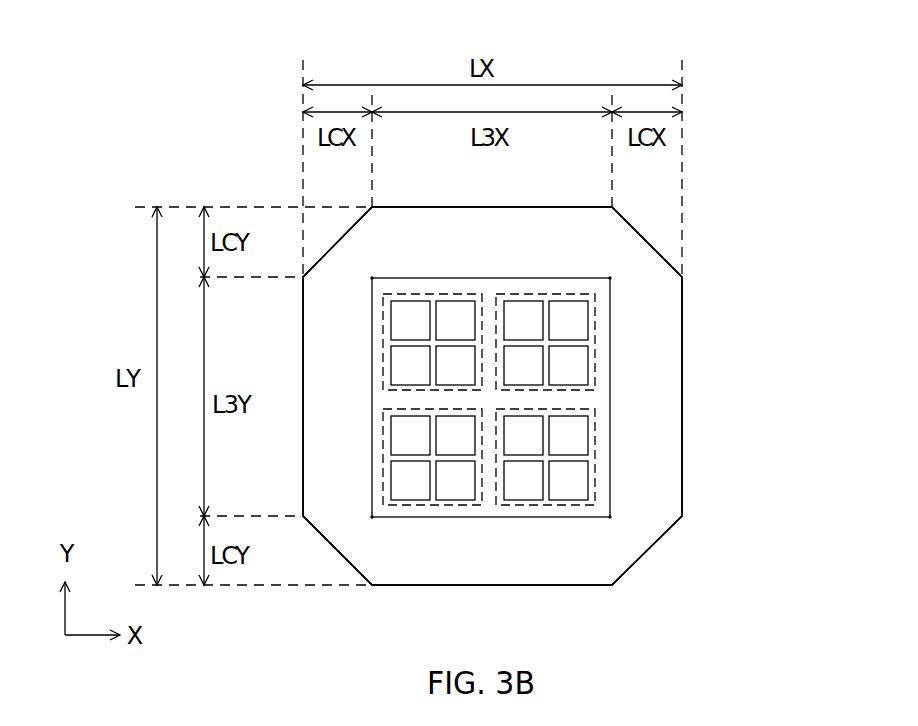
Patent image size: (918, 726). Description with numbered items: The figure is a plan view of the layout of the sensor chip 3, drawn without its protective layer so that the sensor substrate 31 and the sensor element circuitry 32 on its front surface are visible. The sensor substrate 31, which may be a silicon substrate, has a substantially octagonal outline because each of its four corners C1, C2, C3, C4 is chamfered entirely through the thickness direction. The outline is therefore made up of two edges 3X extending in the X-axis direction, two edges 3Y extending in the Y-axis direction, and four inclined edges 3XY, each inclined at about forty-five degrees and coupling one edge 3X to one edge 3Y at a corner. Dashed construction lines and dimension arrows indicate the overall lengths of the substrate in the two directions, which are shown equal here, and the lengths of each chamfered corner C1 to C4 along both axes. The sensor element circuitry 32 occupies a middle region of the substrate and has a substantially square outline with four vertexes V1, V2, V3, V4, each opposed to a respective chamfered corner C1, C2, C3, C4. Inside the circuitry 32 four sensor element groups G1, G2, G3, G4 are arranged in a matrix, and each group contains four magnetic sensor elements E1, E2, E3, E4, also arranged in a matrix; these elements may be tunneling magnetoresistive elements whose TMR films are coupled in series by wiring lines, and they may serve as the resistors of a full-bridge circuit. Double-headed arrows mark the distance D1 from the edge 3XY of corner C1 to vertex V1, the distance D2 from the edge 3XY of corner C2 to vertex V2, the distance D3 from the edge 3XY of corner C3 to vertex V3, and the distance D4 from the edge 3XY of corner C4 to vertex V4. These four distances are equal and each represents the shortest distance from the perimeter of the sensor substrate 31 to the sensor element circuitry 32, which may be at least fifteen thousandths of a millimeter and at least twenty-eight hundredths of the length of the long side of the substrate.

The sensor chip 3 is at (736, 135).
The sensor substrate 31 is at (648, 328).
The sensor element circuitry 32 is at (482, 278).
The edge extending in the X-axis direction 3X is at (405, 206).
The edge extending in the Y-axis direction 3Y is at (303, 341).
The inclined edge 3XY is at (337, 243).
The first corner C1 is at (684, 240).
The second corner C2 is at (651, 581).
The third corner C3 is at (338, 569).
The fourth corner C4 is at (327, 217).
The distance from the edge of corner C1 to vertex V1 D1 is at (646, 243).
The distance from the edge of corner C2 to vertex V2 D2 is at (611, 518).
The distance from the edge of corner C3 to vertex V3 D3 is at (371, 518).
The distance from the edge of corner C4 to vertex V4 D4 is at (338, 244).
The first sensor element group G1 is at (538, 293).
The second sensor element group G2 is at (548, 507).
The third sensor element group G3 is at (413, 507).
The fourth sensor element group G4 is at (430, 293).
The first vertex V1 is at (614, 278).
The second vertex V2 is at (613, 515).
The third vertex V3 is at (369, 516).
The fourth vertex V4 is at (368, 281).
The first magnetic sensor element E1 is at (512, 378).
The second magnetic sensor element E2 is at (512, 423).
The third magnetic sensor element E3 is at (467, 423).
The fourth magnetic sensor element E4 is at (467, 378).